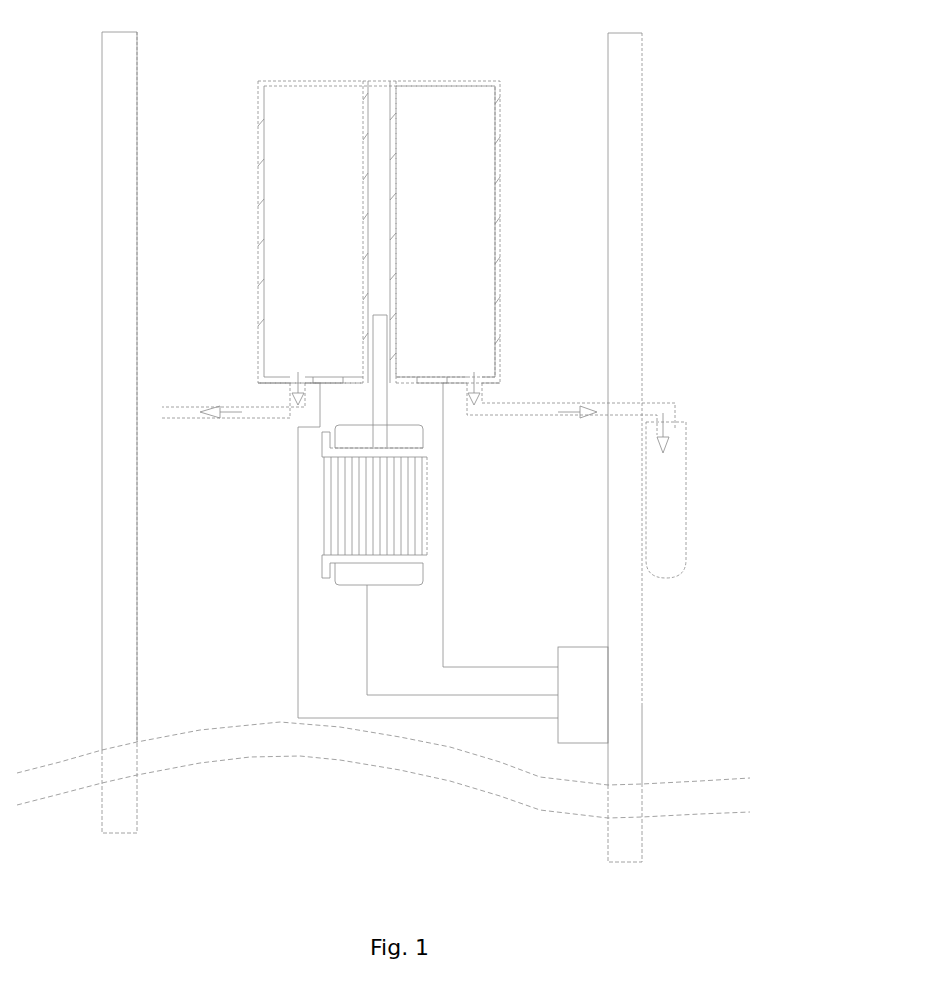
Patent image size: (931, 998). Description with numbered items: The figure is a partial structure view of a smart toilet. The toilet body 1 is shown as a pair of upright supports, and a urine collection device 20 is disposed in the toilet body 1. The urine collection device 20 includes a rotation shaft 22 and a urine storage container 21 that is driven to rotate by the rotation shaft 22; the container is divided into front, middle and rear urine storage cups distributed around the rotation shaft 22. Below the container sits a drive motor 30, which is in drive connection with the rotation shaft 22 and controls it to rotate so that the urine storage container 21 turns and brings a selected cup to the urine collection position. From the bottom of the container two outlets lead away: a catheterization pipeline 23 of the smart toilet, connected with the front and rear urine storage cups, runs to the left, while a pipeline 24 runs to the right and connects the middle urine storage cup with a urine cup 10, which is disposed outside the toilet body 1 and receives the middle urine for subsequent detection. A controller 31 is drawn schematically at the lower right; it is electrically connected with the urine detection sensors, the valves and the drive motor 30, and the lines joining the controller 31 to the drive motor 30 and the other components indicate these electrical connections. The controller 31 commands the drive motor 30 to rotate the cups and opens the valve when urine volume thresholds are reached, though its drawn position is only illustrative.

The toilet body 1 is at (622, 137).
The urine cup 10 is at (668, 578).
The urine collection device 20 is at (428, 208).
The urine storage container 21 is at (452, 147).
The rotation shaft 22 is at (388, 212).
The catheterization pipeline 23 is at (185, 410).
The pipeline 24 is at (550, 413).
The drive motor 30 is at (390, 583).
The controller 31 is at (582, 682).